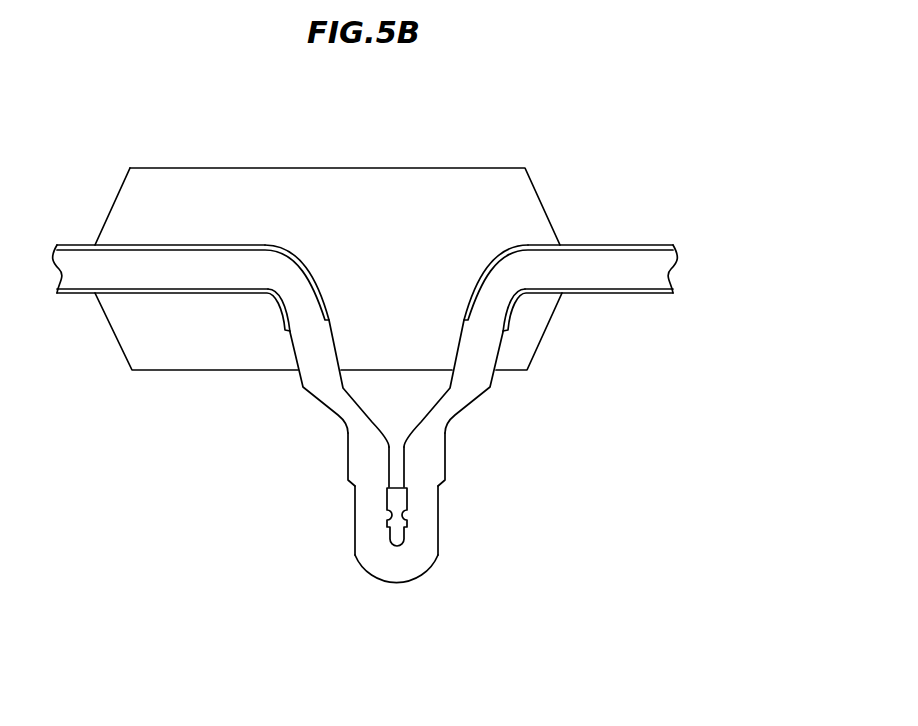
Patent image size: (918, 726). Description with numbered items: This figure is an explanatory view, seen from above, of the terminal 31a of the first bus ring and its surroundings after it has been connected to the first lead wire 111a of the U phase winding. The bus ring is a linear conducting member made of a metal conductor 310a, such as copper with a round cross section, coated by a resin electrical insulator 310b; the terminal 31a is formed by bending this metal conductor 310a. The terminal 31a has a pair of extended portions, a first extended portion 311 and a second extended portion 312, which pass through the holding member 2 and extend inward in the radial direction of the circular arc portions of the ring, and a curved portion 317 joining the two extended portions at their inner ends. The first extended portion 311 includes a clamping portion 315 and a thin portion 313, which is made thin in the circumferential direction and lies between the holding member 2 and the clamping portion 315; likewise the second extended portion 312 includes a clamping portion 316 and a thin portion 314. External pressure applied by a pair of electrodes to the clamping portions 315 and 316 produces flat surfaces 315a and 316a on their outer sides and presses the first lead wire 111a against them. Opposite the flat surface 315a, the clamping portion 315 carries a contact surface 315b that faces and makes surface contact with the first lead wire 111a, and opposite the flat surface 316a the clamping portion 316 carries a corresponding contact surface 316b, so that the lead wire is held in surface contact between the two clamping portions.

The holding member 2 is at (380, 177).
The terminal 31a is at (340, 583).
The metal conductor 310a is at (660, 275).
The electrical insulator 310b is at (647, 243).
The first extended portion 311 is at (262, 428).
The second extended portion 312 is at (527, 428).
The thin portion 313 is at (340, 411).
The thin portion 314 is at (453, 411).
The clamping portion 315 is at (213, 501).
The clamping portion 316 is at (578, 501).
The flat surface 315a is at (355, 527).
The contact surface 315b is at (388, 518).
The flat surface 316a is at (438, 527).
The contact surface 316b is at (407, 518).
The curved portion 317 is at (402, 572).
The first lead wire 111a is at (395, 502).